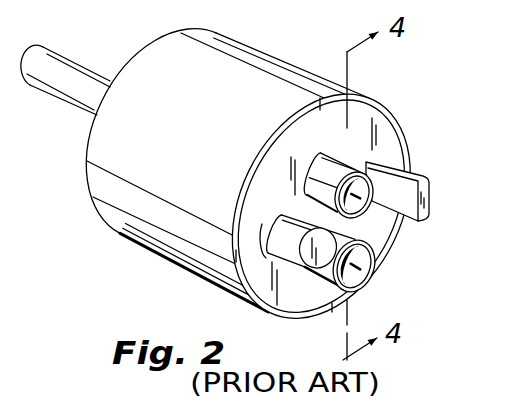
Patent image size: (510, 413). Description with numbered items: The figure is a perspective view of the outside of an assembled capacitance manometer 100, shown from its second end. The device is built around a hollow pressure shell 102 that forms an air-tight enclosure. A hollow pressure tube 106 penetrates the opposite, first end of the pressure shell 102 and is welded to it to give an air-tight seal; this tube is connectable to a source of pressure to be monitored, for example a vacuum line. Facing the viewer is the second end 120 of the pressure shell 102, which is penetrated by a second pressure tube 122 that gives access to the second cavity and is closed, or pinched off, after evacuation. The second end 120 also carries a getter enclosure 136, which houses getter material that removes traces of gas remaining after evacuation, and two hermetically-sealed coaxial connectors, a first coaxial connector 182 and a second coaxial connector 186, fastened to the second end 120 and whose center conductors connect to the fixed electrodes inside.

The capacitance manometer 100 is at (239, 174).
The hollow pressure shell 102 is at (255, 59).
The hollow pressure tube 106 is at (79, 64).
The second end 120 is at (378, 128).
The second pressure tube 122 is at (395, 182).
The getter enclosure 136 is at (281, 216).
The first hermetically-sealed coaxial connector 182 is at (385, 258).
The second hermetically-sealed coaxial connector 186 is at (317, 162).